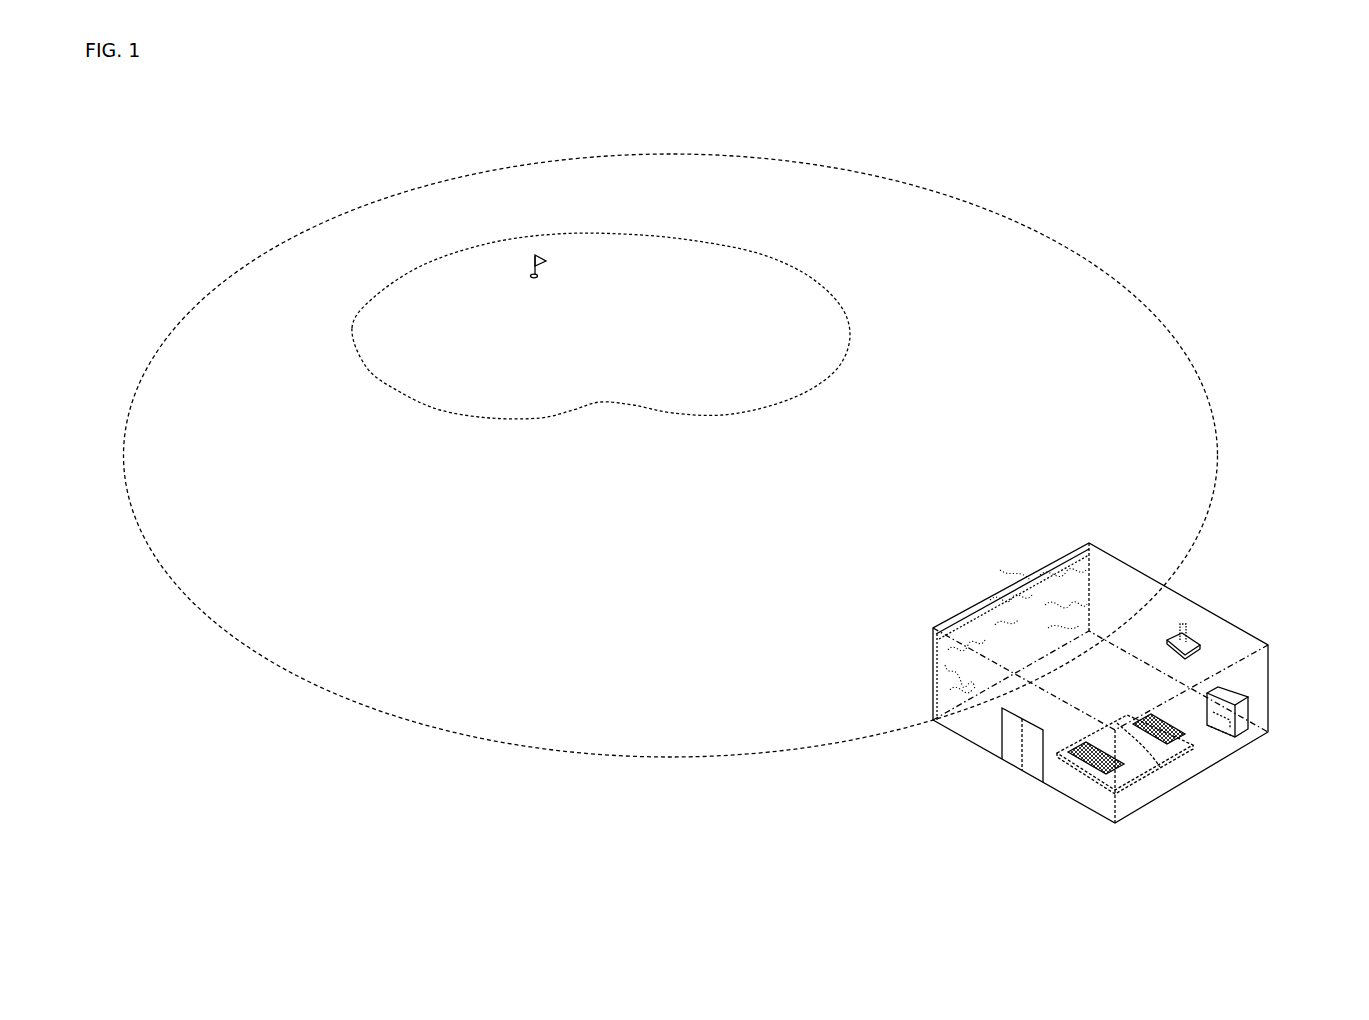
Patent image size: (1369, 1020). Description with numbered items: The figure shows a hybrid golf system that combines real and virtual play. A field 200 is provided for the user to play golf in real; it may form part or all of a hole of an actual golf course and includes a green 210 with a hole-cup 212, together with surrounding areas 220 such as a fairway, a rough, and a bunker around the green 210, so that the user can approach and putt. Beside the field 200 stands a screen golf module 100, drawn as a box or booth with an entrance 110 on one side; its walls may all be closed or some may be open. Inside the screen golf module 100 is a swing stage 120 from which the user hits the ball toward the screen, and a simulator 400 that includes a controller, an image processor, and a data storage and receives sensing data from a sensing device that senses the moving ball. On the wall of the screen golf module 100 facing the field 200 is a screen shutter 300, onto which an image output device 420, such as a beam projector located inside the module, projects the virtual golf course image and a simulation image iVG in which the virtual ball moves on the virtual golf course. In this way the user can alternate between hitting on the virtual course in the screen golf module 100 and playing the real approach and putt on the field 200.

The screen golf module 100 is at (1088, 686).
The entrance 110 is at (1015, 757).
The swing stage 120 is at (1168, 757).
The field 200 is at (1093, 238).
The green 210 is at (833, 332).
The hole-cup 212 is at (545, 281).
The surrounding areas 220 is at (1120, 360).
The screen shutter 300 is at (937, 690).
The simulator 400 is at (1245, 690).
The image output device 420 is at (1197, 642).
The simulation image iVG is at (1084, 571).